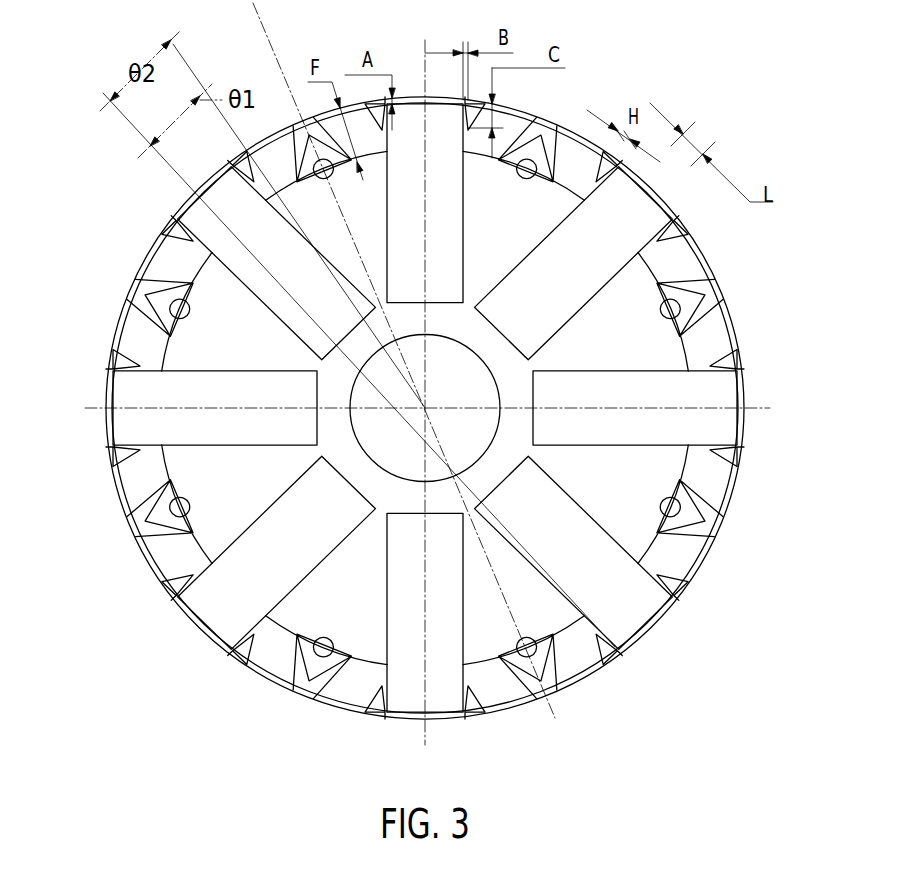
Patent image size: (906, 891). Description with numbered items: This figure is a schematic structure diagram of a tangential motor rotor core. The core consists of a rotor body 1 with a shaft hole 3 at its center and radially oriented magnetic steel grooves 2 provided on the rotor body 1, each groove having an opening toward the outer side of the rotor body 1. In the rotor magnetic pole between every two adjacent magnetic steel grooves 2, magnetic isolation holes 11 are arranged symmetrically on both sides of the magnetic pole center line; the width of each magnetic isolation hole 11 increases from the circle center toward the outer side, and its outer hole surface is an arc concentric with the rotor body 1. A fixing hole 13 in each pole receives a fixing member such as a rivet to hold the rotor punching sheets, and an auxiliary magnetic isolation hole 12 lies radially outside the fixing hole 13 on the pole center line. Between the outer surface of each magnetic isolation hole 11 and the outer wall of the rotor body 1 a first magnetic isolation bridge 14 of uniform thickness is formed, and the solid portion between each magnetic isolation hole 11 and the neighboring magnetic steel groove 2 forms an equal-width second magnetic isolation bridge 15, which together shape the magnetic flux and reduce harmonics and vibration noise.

The rotor body 1 is at (398, 408).
The magnetic steel groove 2 is at (627, 583).
The shaft hole 3 is at (483, 398).
The magnetic isolation hole 11 is at (112, 343).
The auxiliary magnetic isolation hole 12 is at (140, 295).
The fixing hole 13 is at (182, 302).
The first magnetic isolation bridge 14 is at (165, 592).
The second magnetic isolation bridge 15 is at (112, 457).